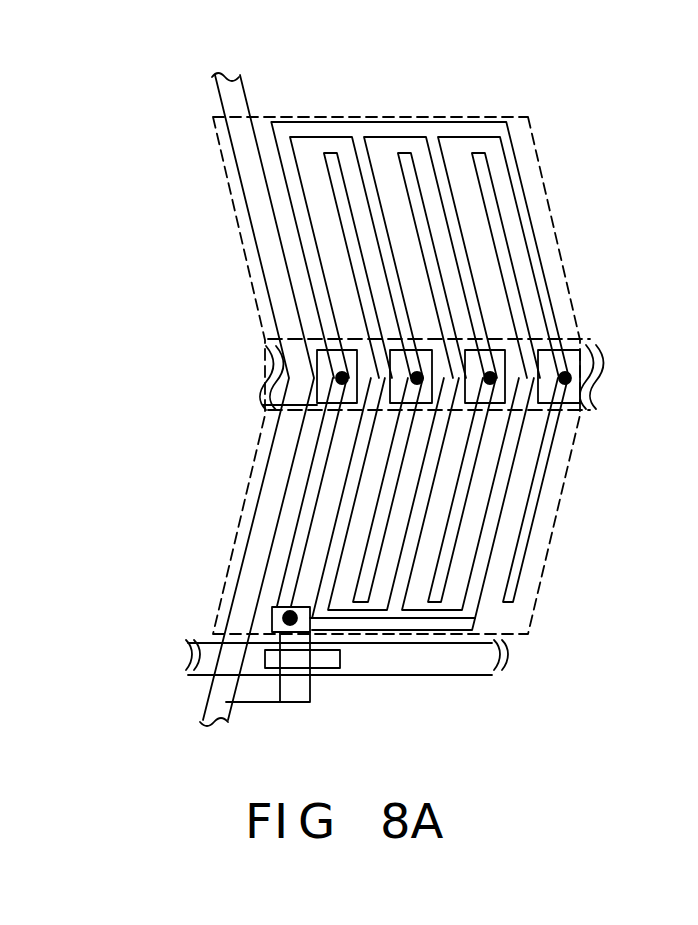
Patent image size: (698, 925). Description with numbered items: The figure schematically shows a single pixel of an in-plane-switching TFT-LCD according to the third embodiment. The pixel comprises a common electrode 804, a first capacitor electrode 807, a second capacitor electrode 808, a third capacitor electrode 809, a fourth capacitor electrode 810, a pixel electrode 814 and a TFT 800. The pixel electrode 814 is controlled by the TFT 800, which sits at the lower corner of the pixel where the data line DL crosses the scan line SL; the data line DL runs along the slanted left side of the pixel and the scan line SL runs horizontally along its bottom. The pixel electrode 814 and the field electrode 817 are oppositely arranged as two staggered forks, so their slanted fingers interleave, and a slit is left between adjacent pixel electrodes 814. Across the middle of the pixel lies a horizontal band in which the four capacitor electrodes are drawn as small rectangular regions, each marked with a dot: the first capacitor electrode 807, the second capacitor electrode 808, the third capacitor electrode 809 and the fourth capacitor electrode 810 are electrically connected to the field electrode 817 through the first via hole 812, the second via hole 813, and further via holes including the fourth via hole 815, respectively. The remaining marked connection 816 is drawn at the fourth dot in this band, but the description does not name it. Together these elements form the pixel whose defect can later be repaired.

The TFT 800 is at (309, 662).
The common electrode 804 is at (273, 386).
The first capacitor electrode 807 is at (342, 378).
The second capacitor electrode 808 is at (410, 397).
The third capacitor electrode 809 is at (490, 378).
The fourth capacitor electrode 810 is at (567, 397).
The first via hole 812 is at (318, 353).
The second via hole 813 is at (390, 397).
The pixel electrode 814 is at (487, 201).
The fourth via hole 815 is at (490, 353).
The via 816 is at (565, 378).
The field electrode 817 is at (510, 147).
The data line DL is at (223, 74).
The scan line SL is at (222, 660).